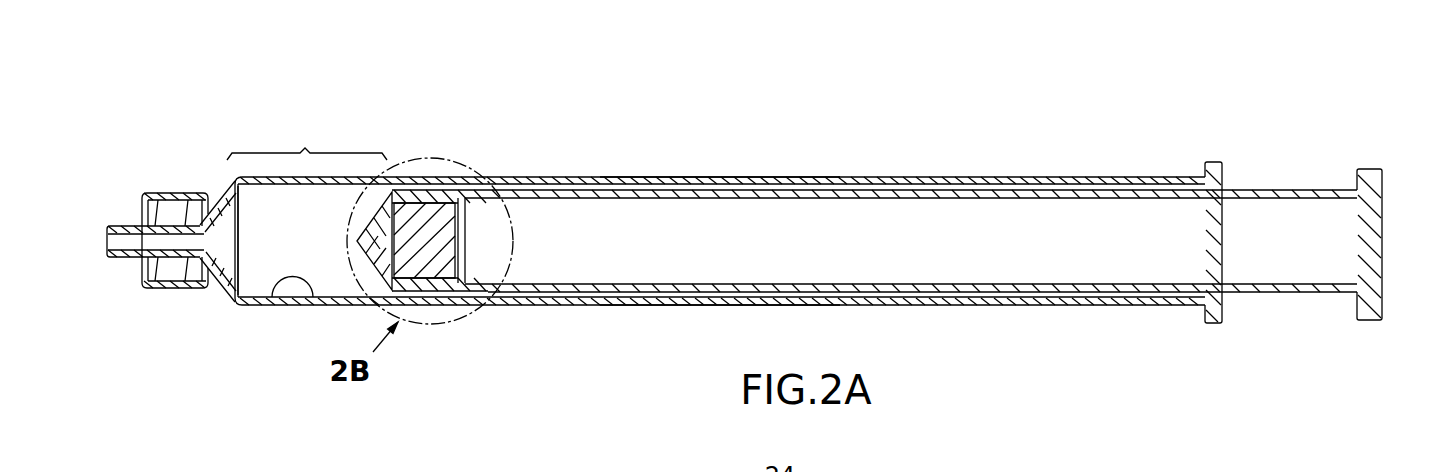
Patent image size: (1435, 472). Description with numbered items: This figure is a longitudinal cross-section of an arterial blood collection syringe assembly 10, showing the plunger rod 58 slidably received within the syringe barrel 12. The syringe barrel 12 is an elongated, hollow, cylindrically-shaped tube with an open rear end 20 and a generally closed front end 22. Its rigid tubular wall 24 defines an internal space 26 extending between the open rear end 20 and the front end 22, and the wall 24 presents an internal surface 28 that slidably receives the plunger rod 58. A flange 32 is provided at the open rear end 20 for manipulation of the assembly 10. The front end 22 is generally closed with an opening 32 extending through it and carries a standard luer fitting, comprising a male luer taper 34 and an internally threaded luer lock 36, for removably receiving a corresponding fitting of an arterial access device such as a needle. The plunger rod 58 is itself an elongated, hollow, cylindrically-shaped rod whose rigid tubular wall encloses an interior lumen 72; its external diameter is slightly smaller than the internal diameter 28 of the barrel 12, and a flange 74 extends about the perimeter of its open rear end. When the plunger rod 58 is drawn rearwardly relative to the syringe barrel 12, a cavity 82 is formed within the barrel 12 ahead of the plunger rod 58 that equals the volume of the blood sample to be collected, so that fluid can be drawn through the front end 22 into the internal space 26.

The arterial blood collection syringe assembly 10 is at (594, 100).
The syringe barrel 12 is at (813, 179).
The open rear end 20 is at (1197, 168).
The front end 22 is at (205, 185).
The rigid tubular wall 24 is at (712, 178).
The internal space 26 is at (268, 250).
The internal surface 28 is at (278, 298).
The flange 32 is at (132, 240).
The male luer taper 34 is at (135, 258).
The luer lock 36 is at (179, 290).
The plunger rod 58 is at (908, 193).
The interior lumen 72 is at (846, 254).
The flange 74 is at (1368, 169).
The cavity 82 is at (307, 137).